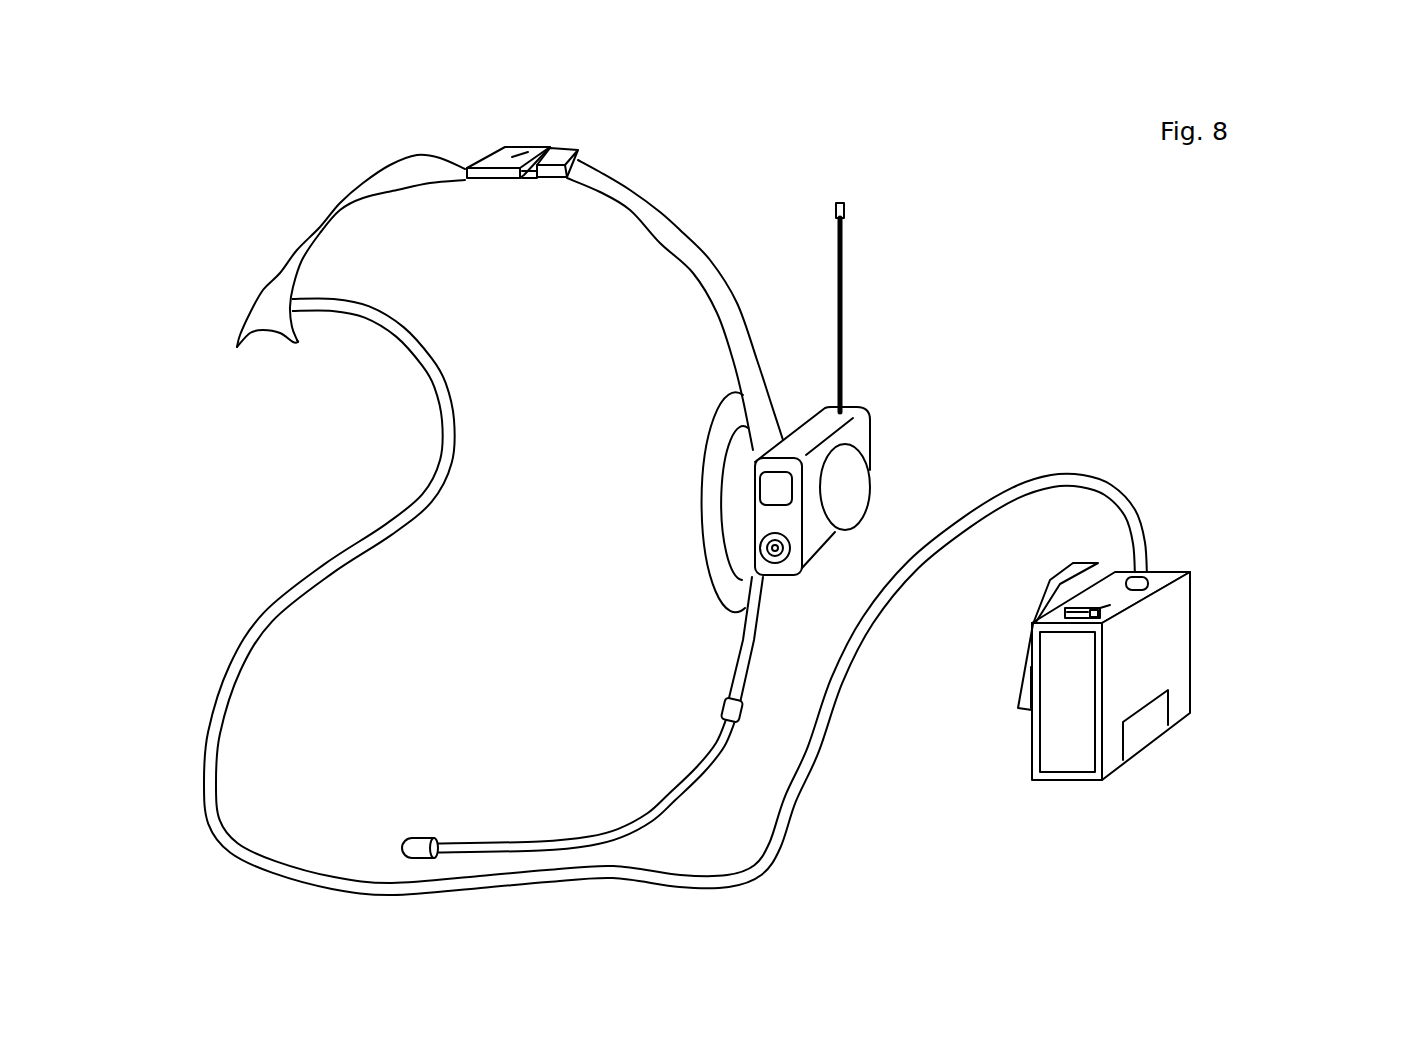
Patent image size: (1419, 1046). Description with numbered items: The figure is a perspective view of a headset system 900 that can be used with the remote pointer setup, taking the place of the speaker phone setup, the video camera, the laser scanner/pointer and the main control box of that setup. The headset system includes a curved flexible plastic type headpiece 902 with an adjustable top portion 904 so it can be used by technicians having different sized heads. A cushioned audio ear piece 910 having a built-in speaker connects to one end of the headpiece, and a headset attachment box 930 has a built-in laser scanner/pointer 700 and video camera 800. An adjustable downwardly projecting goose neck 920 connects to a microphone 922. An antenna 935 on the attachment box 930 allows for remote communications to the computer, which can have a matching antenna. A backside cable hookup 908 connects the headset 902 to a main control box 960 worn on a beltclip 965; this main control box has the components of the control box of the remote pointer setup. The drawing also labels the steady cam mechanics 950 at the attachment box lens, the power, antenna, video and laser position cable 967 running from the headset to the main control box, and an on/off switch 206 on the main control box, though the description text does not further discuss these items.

The headset system 900 is at (185, 137).
The headpiece 902 is at (703, 272).
The adjustable top portion 904 is at (532, 147).
The backside cable hookup 908 is at (297, 281).
The cushioned audio ear piece 910 is at (707, 505).
The goose neck 920 is at (620, 835).
The microphone 922 is at (412, 848).
The headset attachment box 930 is at (805, 437).
The antenna 935 is at (842, 333).
The steady cam mechanics 950 is at (855, 492).
The main control box 960 is at (1127, 673).
The beltclip 965 is at (1030, 678).
The power, antenna, video and laser position cable 967 is at (1102, 485).
The laser scanner/pointer 700 is at (775, 490).
The video camera 800 is at (770, 547).
The on/off switch 206 is at (1107, 617).